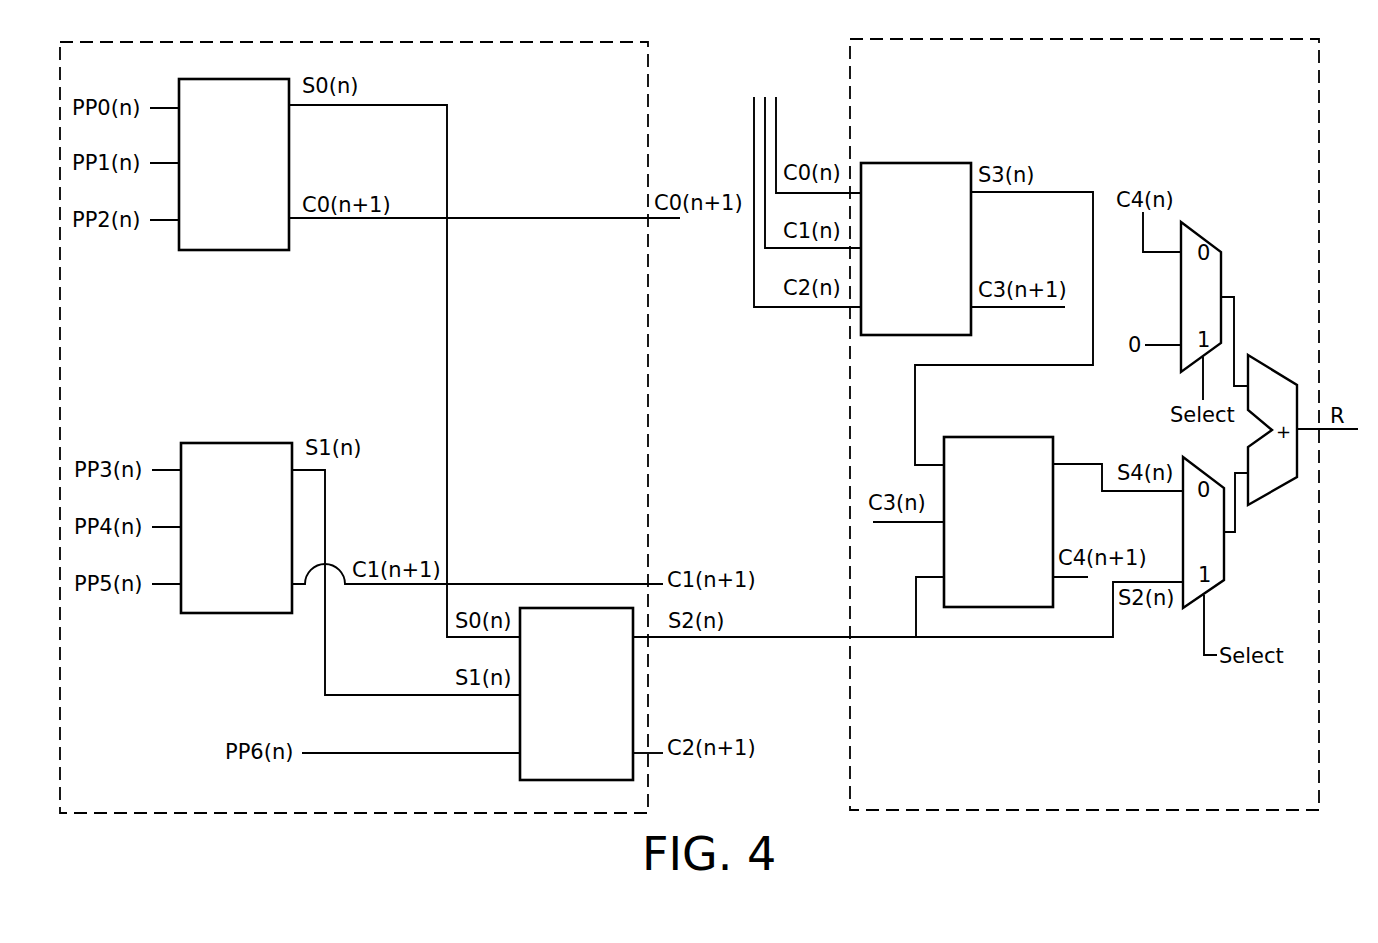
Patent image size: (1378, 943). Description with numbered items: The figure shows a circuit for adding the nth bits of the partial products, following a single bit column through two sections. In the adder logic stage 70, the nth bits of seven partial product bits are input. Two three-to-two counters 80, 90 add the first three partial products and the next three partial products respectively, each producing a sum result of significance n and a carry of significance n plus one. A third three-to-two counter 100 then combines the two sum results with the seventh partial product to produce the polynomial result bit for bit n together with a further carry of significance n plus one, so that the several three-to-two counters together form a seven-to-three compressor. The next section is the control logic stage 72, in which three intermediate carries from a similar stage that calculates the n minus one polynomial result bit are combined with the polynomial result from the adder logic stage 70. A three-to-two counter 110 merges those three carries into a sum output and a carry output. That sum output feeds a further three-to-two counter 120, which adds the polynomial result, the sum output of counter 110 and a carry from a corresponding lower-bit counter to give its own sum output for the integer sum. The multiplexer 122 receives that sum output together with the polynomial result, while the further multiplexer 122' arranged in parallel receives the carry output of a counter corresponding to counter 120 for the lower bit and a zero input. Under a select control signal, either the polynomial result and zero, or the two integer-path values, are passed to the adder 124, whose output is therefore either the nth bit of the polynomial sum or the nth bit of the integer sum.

The adder logic stage 70 is at (648, 53).
The control logic stage 72 is at (849, 53).
The 3:2 counter 80 is at (220, 172).
The 3:2 counter 90 is at (222, 534).
The third 3:2 counter 100 is at (557, 697).
The 3:2 counter 110 is at (895, 252).
The 3:2 counter 120 is at (978, 524).
The multiplexer 122 is at (1242, 532).
The further multiplexer 122' is at (1206, 275).
The adder 124 is at (1276, 372).